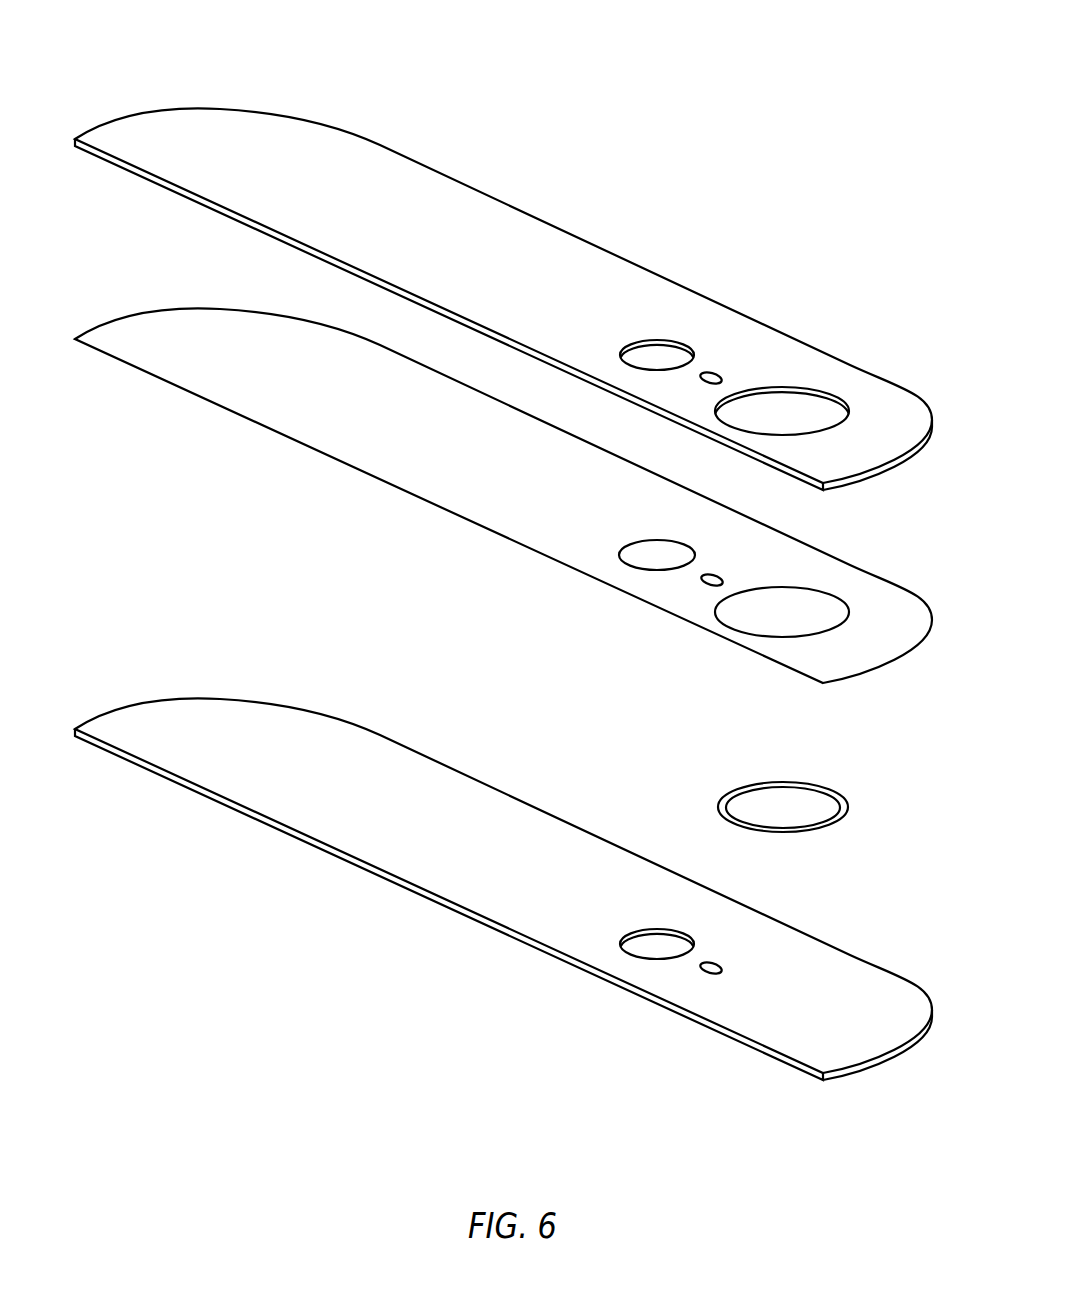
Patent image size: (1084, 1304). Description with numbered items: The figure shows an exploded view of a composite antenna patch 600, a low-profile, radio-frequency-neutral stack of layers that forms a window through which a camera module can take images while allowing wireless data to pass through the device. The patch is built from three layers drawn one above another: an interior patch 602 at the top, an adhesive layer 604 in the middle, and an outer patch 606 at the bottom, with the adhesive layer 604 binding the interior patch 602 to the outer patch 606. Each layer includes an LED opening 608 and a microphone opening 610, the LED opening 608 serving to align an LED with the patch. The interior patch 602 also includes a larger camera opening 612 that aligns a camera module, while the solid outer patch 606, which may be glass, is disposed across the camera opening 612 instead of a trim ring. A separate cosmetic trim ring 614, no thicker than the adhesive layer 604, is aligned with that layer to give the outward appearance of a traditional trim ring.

The composite antenna patch 600 is at (605, 124).
The interior patch 602 is at (315, 193).
The adhesive layer 604 is at (315, 393).
The outer patch 606 is at (315, 783).
The LED opening 608 is at (695, 348).
The microphone opening 610 is at (722, 377).
The camera opening 612 is at (838, 397).
The cosmetic trim ring 614 is at (722, 797).